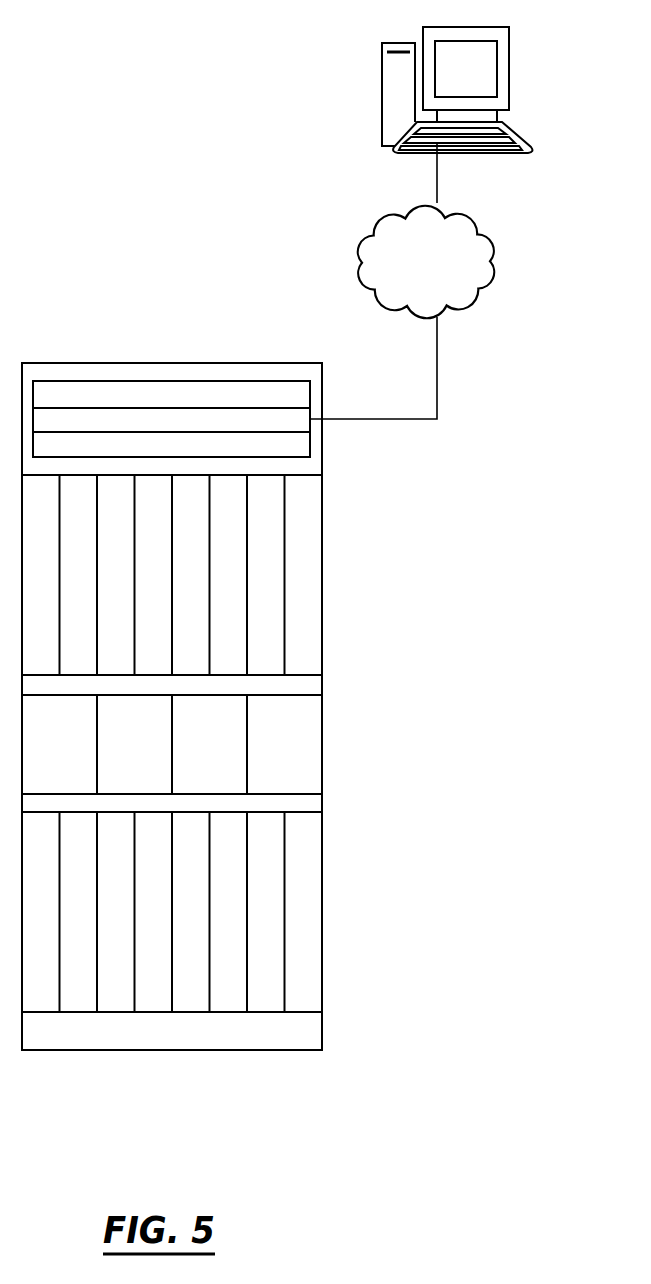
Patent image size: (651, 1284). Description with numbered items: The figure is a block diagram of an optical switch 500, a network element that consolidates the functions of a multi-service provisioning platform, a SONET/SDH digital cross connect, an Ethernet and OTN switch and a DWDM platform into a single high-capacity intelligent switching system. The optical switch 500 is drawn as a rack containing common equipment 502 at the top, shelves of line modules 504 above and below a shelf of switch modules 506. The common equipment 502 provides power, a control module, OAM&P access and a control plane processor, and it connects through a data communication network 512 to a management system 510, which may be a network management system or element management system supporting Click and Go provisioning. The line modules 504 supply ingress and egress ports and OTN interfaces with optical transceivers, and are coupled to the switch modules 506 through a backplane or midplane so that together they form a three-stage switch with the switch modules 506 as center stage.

The optical switch 500 is at (120, 283).
The common equipment 502 is at (174, 381).
The line modules 504 is at (322, 538).
The switch modules 506 is at (322, 752).
The management system 510 is at (509, 77).
The data communication network 512 is at (426, 262).